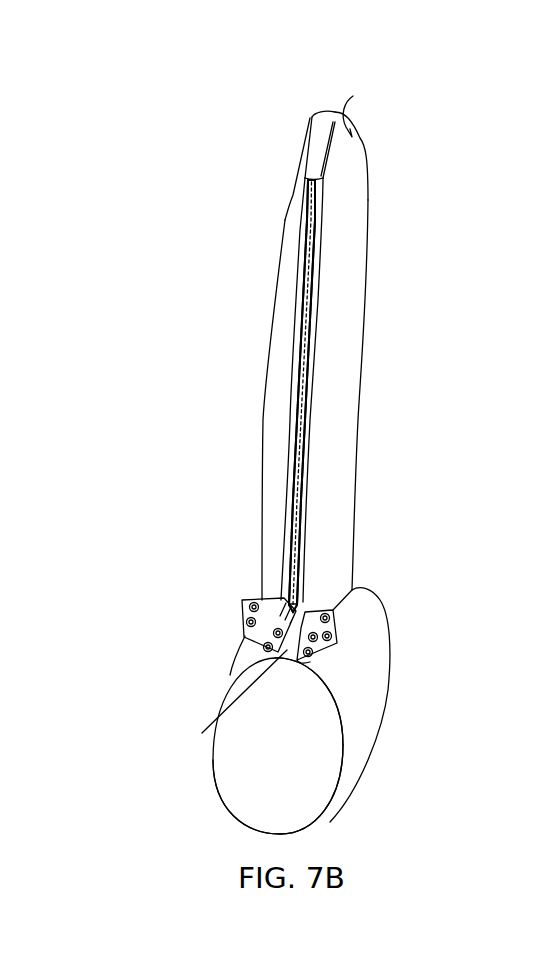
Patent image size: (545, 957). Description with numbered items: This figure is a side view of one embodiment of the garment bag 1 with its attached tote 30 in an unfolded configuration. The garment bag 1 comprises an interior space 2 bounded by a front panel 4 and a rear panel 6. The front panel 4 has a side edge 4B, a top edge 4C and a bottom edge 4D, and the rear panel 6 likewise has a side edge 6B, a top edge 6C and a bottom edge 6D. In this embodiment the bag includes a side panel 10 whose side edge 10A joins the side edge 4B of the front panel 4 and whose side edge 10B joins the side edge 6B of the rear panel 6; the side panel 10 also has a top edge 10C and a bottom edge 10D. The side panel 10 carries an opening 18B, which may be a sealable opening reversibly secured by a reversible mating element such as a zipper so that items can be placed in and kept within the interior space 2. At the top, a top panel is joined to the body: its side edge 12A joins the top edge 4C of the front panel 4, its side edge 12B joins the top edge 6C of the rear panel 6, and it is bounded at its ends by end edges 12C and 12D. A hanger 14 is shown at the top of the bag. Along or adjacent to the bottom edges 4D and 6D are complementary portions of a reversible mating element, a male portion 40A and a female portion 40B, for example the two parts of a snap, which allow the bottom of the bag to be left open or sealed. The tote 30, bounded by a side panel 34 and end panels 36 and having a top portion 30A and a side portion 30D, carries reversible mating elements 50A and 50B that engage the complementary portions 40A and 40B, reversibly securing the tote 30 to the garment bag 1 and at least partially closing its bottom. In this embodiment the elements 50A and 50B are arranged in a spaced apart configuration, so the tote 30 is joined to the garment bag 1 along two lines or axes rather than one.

The garment bag 1 is at (265, 122).
The interior space 2 is at (306, 612).
The front panel 4 is at (283, 303).
The side edge of front panel 4B is at (288, 393).
The top edge of front panel 4C is at (295, 148).
The bottom edge of front panel 4D is at (244, 637).
The rear panel 6 is at (348, 281).
The side edge of rear panel 6B is at (318, 355).
The top edge of rear panel 6C is at (362, 137).
The bottom edge of rear panel 6D is at (337, 643).
The side panel 10 is at (312, 412).
The side edge of side panel 10A is at (284, 446).
The side edge of side panel 10B is at (316, 384).
The top edge of side panel 10C is at (323, 175).
The bottom edge of side panel 10D is at (300, 614).
The side edge of top panel 12A is at (310, 134).
The side edge of top panel 12B is at (333, 153).
The end edge of top panel 12C is at (313, 113).
The end edge of top panel 12D is at (305, 178).
The hook 14 is at (361, 111).
The opening 18B is at (300, 464).
The tote 30 is at (400, 748).
The top portion of tote 30A is at (236, 702).
The side portion of tote 30D is at (352, 748).
The side panel of tote 34 is at (373, 697).
The end panel of tote 36 is at (320, 822).
The male portion of reversible mating element 40A is at (251, 622).
The female portion of reversible mating element 40B is at (329, 636).
The reversible mating element 50A is at (315, 658).
The reversible mating element 50B is at (312, 622).